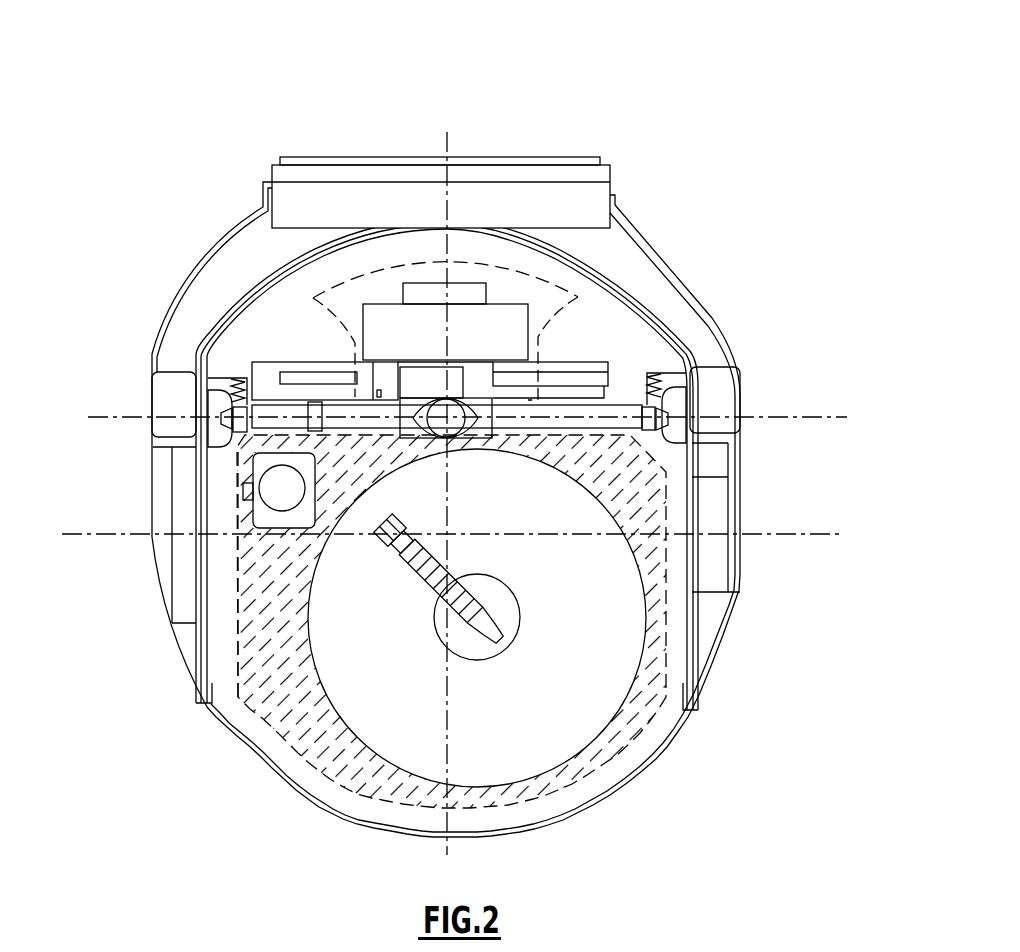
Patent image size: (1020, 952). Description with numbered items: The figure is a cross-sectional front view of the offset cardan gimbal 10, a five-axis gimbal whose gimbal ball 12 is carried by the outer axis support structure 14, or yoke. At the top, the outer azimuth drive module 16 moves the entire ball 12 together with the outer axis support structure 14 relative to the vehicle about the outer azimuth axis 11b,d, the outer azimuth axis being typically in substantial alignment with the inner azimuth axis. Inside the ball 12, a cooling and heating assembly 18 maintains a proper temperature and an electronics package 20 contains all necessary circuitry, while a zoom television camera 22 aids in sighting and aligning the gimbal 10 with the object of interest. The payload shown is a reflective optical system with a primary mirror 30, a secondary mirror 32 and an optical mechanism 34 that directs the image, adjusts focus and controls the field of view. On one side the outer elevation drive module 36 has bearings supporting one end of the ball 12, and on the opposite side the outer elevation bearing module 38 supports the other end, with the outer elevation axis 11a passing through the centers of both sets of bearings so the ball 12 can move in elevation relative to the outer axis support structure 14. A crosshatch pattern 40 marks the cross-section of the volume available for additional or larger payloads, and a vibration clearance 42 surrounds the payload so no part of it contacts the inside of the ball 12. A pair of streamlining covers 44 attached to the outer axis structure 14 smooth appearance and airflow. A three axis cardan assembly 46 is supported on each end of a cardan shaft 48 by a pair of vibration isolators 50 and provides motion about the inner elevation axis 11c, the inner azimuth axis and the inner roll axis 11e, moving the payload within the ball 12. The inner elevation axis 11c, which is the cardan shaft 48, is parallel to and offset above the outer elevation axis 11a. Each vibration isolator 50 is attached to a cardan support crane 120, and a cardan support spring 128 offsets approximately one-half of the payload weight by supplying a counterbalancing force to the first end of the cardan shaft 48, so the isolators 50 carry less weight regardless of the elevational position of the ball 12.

The gimbal 10 is at (745, 50).
The gimbal ball 12 is at (228, 757).
The outer axis support structure 14 is at (214, 245).
The outer azimuth drive module 16 is at (368, 150).
The cooling and heating assembly 18 is at (473, 278).
The electronics package 20 is at (537, 308).
The television camera 22 is at (310, 515).
The primary mirror 30 is at (625, 512).
The secondary mirror 32 is at (517, 638).
The optical mechanism 34 is at (480, 640).
The outer elevation drive module 36 is at (165, 558).
The outer elevation bearing module 38 is at (725, 600).
The crosshatch pattern 40 is at (250, 652).
The vibration clearance 42 is at (580, 257).
The streamlining covers 44 is at (146, 484).
The three axis cardan assembly 46 is at (505, 390).
The cardan shaft 48 is at (615, 405).
The vibration isolators 50 is at (202, 393).
The cardan support crane 120 is at (683, 353).
The cardan support spring 128 is at (660, 350).
The outer elevation axis 11a is at (808, 534).
The outer azimuth axis and inner azimuth axis 11b,d is at (447, 142).
The inner elevation axis 11c is at (105, 418).
The inner roll axis 11e is at (455, 420).